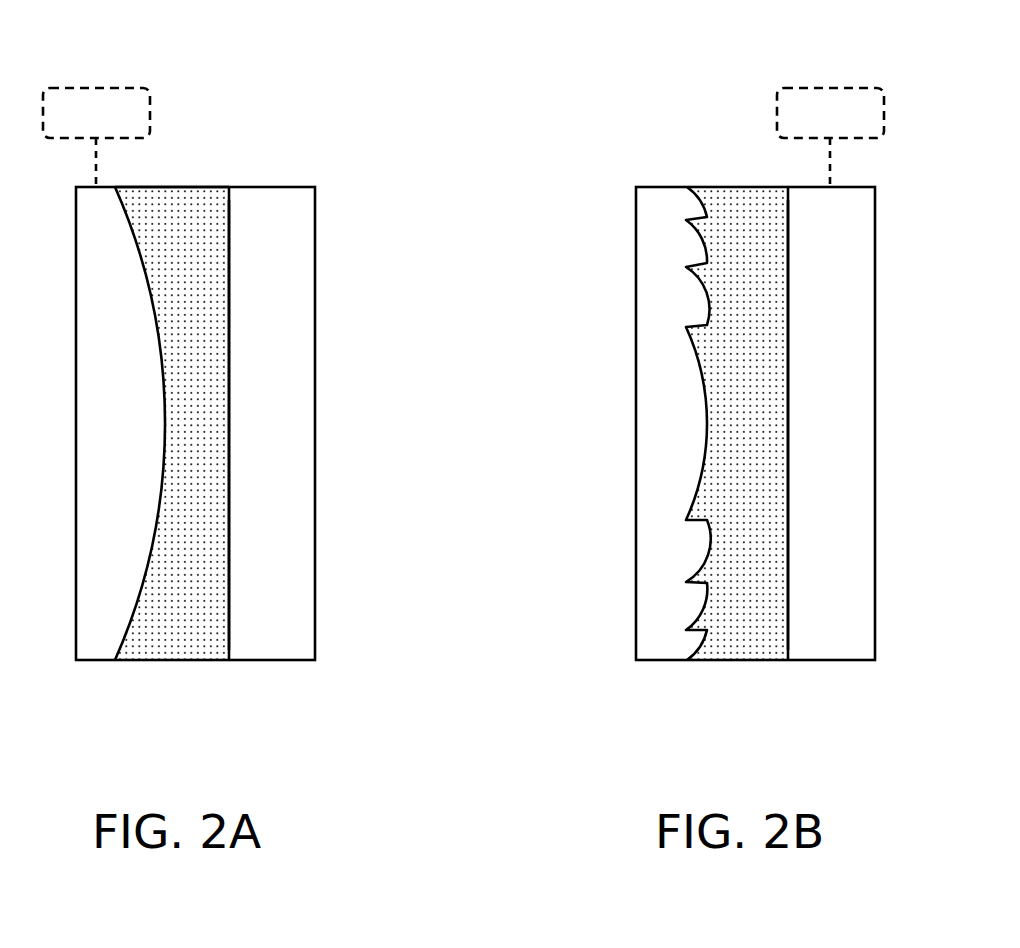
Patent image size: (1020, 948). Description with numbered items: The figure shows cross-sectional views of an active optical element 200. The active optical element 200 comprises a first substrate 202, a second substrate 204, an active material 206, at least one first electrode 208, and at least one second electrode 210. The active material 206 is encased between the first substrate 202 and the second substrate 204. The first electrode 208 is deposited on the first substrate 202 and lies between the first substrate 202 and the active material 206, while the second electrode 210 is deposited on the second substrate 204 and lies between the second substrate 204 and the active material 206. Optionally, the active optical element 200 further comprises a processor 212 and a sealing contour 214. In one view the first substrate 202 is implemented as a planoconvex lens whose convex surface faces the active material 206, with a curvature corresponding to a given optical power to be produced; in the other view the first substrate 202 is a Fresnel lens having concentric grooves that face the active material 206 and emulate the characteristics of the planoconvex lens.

In FIG. 2A, the active optical element 200 is at (327, 78).
In FIG. 2B, the active optical element 200 is at (603, 78).
In FIG. 2A, the first substrate 202 is at (97, 647).
In FIG. 2B, the first substrate 202 is at (657, 645).
In FIG. 2A, the second substrate 204 is at (282, 645).
In FIG. 2B, the second substrate 204 is at (840, 645).
In FIG. 2A, the active material 206 is at (197, 622).
In FIG. 2B, the active material 206 is at (757, 620).
In FIG. 2A, the first electrode 208 is at (165, 428).
In FIG. 2B, the first electrode 208 is at (707, 410).
In FIG. 2A, the second electrode 210 is at (229, 317).
In FIG. 2B, the second electrode 210 is at (788, 333).
In FIG. 2A, the processor 212 is at (96, 137).
In FIG. 2B, the processor 212 is at (830, 137).
In FIG. 2A, the sealing contour 214 is at (173, 190).